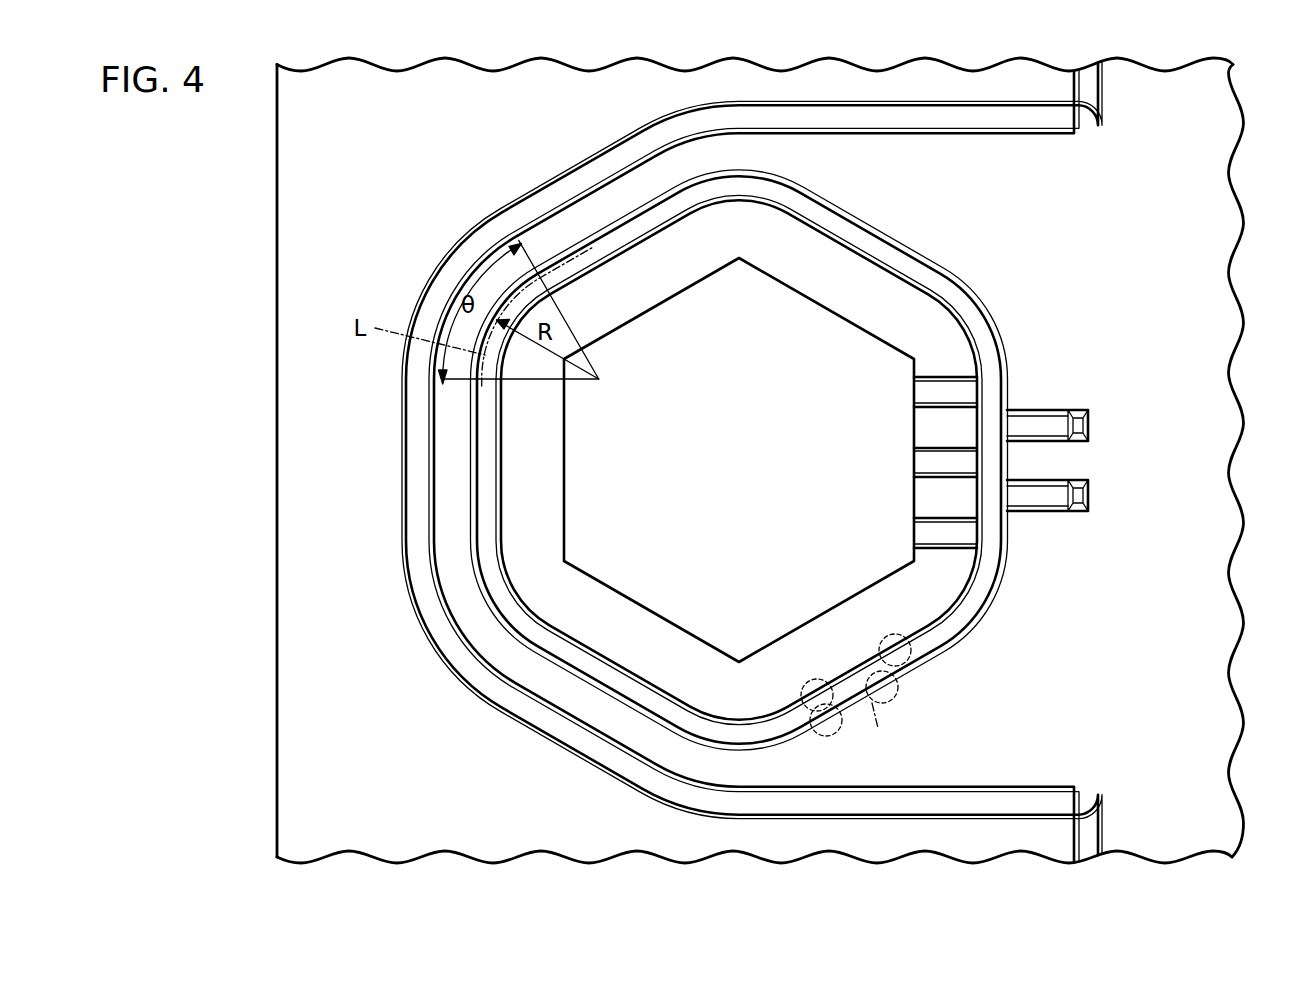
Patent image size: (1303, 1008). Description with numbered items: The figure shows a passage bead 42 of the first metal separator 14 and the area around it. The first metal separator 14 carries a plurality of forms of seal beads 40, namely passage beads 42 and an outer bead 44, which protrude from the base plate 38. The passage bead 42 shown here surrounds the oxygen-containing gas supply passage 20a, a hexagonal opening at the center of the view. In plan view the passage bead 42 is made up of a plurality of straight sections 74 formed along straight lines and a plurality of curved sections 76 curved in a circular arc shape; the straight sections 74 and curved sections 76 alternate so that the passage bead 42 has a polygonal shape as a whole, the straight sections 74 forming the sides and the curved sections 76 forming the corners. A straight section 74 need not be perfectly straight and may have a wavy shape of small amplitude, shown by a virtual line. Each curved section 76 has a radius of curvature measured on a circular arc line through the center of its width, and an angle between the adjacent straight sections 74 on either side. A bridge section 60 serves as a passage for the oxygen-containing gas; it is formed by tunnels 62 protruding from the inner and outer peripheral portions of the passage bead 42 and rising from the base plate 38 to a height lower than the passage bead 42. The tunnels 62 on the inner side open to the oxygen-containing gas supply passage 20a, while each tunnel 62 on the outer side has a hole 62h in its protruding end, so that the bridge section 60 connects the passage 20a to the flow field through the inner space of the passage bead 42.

The first metal separator 14 is at (268, 126).
The base plate 38 is at (1195, 263).
The seal beads 40 is at (468, 458).
The outer bead 44 is at (557, 203).
The passage bead 42 is at (483, 428).
The straight section 74 is at (647, 220).
The curved section 76 is at (738, 180).
The oxygen-containing gas supply passage 20a is at (605, 545).
The bridge section 60 is at (1110, 393).
The tunnels 62 is at (925, 388).
The hole 62h is at (1090, 425).